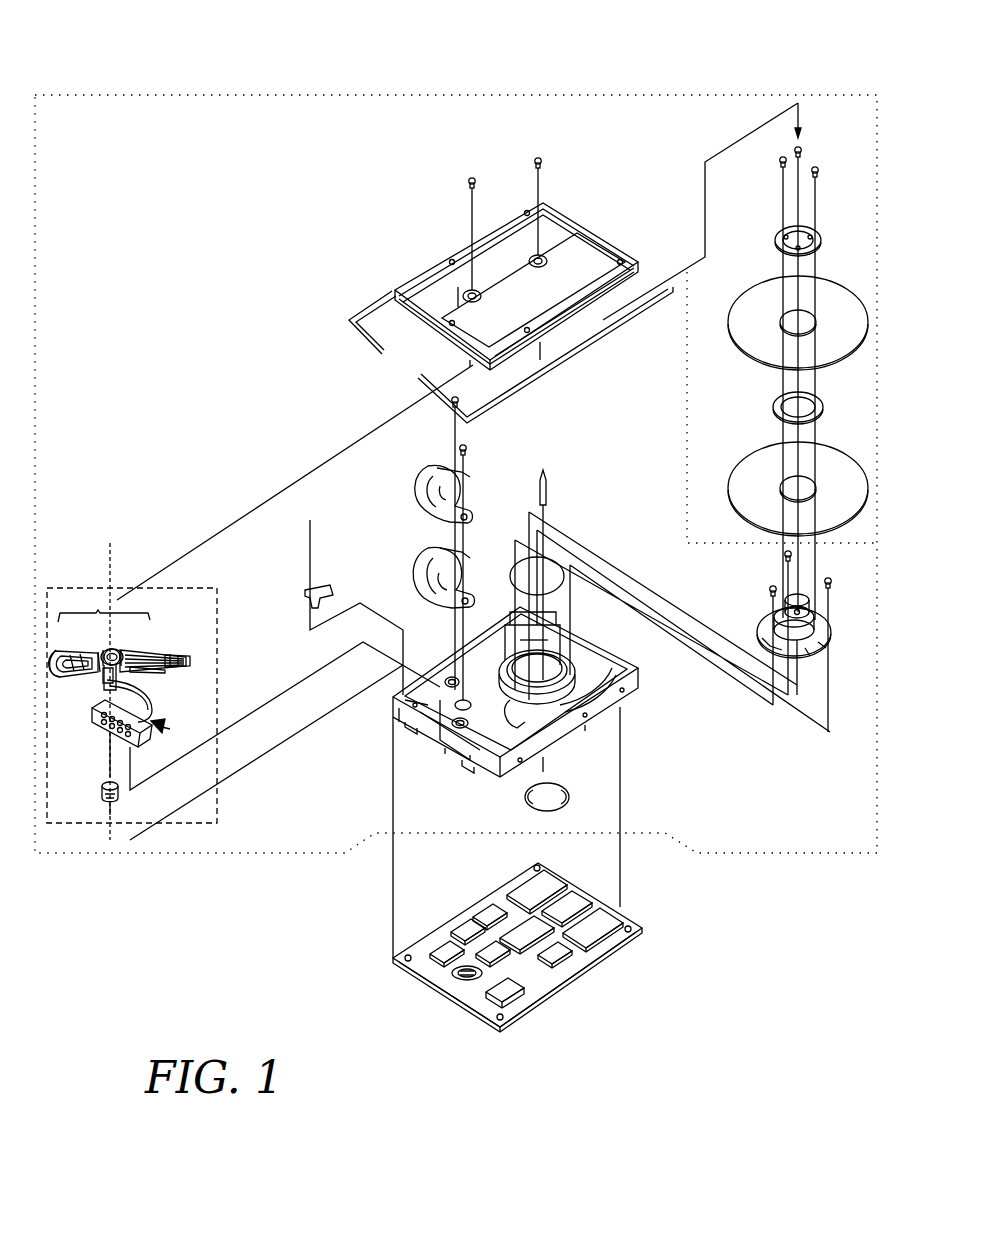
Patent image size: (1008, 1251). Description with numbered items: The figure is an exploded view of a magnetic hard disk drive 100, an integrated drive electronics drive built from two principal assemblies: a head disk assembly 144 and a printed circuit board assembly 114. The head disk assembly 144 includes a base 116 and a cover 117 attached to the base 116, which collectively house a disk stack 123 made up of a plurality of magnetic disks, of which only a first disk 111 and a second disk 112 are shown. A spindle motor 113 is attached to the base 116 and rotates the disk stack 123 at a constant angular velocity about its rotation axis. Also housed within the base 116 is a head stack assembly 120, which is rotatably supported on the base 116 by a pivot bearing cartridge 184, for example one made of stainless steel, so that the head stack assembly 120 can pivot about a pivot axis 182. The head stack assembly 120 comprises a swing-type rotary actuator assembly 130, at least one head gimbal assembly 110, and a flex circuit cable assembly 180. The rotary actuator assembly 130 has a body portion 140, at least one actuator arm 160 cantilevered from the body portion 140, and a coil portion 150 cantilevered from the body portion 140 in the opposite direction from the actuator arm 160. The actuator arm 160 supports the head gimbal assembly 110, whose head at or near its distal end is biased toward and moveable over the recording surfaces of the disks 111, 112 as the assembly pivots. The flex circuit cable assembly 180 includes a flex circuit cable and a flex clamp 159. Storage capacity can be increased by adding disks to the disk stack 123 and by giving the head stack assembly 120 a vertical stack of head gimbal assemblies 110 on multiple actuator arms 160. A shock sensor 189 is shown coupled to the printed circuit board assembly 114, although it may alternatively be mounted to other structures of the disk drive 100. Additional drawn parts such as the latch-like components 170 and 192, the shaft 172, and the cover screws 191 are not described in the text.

The magnetic hard disk drive 100 is at (296, 70).
The head gimbal assembly 110 is at (182, 659).
The first disk 111 is at (735, 468).
The second disk 112 is at (743, 352).
The spindle motor 113 is at (763, 623).
The printed circuit board assembly 114 is at (567, 983).
The base 116 is at (630, 698).
The cover 117 is at (421, 272).
The head stack assembly 120 is at (80, 587).
The disk stack 123 is at (685, 458).
The rotary actuator assembly 130 is at (100, 654).
The body portion 140 is at (118, 652).
The head disk assembly 144 is at (723, 858).
The coil portion 150 is at (68, 680).
The flex clamp 159 is at (105, 724).
The actuator arm 160 is at (163, 673).
The latch 170 is at (440, 489).
The pivot shaft 172 is at (487, 551).
The flex circuit cable assembly 180 is at (170, 729).
The pivot axis 182 is at (112, 546).
The pivot bearing cartridge 184 is at (103, 795).
The shock sensor 189 is at (453, 970).
The cover screws 191 is at (474, 176).
The latch 192 is at (418, 568).